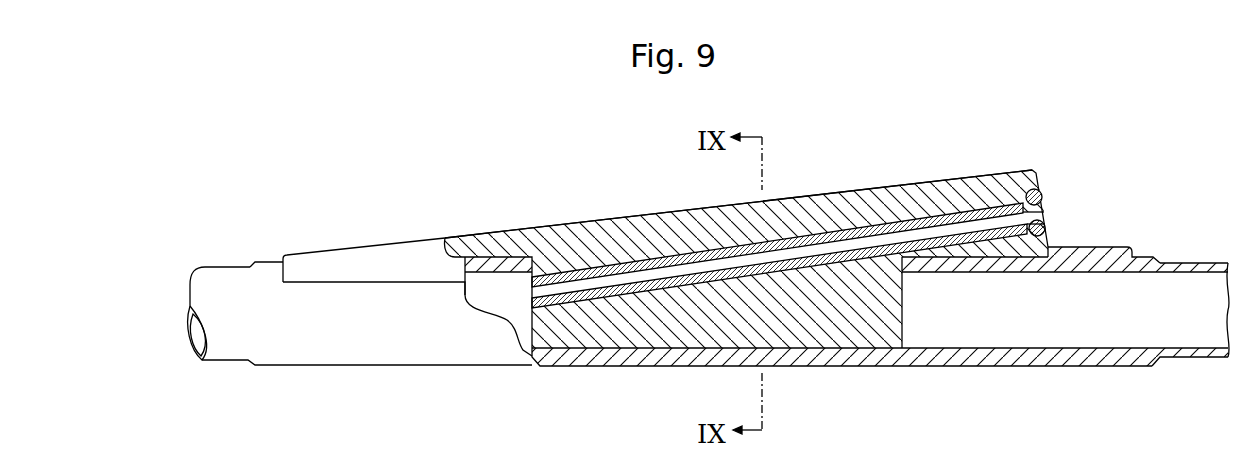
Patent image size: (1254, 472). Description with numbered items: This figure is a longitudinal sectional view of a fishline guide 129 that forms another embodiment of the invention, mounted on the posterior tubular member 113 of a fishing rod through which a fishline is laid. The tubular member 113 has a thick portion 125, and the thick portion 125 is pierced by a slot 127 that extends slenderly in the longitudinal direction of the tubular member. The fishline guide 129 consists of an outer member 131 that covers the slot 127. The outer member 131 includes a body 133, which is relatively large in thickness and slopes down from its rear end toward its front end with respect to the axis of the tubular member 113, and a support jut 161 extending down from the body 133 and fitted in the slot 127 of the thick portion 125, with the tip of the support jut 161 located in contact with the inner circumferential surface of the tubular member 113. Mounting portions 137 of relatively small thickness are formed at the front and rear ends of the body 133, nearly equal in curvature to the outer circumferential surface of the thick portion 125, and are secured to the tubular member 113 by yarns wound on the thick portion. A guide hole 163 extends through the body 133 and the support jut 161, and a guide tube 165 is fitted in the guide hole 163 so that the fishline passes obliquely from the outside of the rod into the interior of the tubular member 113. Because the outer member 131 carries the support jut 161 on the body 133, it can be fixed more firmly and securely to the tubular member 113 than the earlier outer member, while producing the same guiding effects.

The posterior tubular member 113 is at (1202, 267).
The thick portion 125 is at (1033, 355).
The slot 127 is at (897, 265).
The fishline guide 129 is at (623, 194).
The outer member 131 is at (889, 180).
The body 133 is at (935, 192).
The mounting portions 137 is at (322, 263).
The support jut 161 is at (837, 320).
The guide hole 163 is at (840, 240).
The guide tube 165 is at (657, 287).